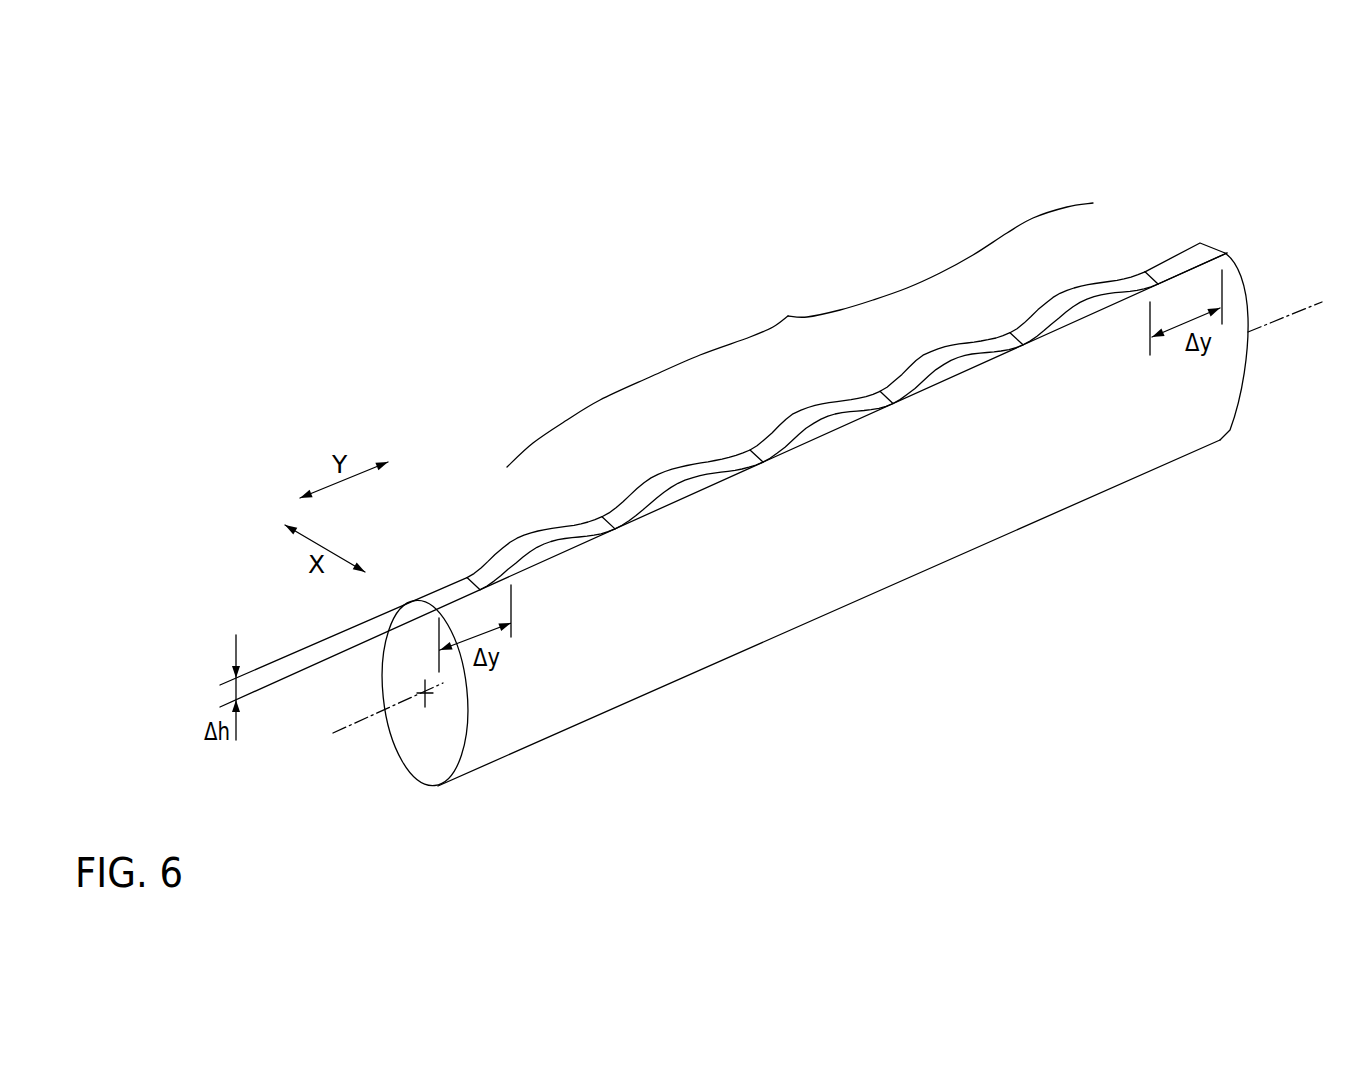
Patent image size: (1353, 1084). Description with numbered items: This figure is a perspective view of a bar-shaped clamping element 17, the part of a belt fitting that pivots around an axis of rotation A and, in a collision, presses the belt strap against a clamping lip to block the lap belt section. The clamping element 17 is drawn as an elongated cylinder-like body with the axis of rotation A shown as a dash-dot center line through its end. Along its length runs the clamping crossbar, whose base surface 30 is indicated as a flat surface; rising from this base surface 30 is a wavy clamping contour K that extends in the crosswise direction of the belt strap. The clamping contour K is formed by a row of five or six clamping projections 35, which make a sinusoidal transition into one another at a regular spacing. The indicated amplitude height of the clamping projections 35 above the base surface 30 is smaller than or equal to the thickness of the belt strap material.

The clamping element 17 is at (1247, 305).
The base surface 30 is at (682, 497).
The clamping projections 35 is at (1075, 292).
The clamping contour K is at (800, 335).
The axis of rotation A is at (347, 727).